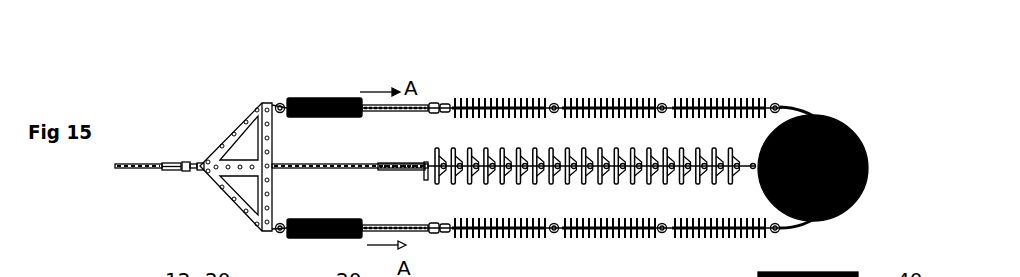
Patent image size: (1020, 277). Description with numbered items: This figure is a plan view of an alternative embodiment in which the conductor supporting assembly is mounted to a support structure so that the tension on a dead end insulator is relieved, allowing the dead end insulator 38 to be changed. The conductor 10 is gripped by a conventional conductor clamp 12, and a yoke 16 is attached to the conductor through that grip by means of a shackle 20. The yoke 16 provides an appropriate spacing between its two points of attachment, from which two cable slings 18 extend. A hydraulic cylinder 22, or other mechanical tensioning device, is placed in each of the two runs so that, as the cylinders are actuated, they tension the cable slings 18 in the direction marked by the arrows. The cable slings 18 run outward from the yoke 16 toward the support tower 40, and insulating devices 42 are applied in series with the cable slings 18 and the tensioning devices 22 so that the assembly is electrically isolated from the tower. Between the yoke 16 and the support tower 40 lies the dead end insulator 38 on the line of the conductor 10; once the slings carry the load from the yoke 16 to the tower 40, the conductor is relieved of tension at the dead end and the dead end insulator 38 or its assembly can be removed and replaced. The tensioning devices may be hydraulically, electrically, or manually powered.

The conductor 10 is at (121, 163).
The conductor clamp 12 is at (170, 162).
The yoke 16 is at (229, 134).
The cable sling 18 is at (802, 108).
The shackle 20 is at (198, 172).
The hydraulic cylinder 22 is at (338, 98).
The dead end insulator 38 is at (536, 152).
The support tower 40 is at (847, 128).
The insulating device 42 is at (498, 97).